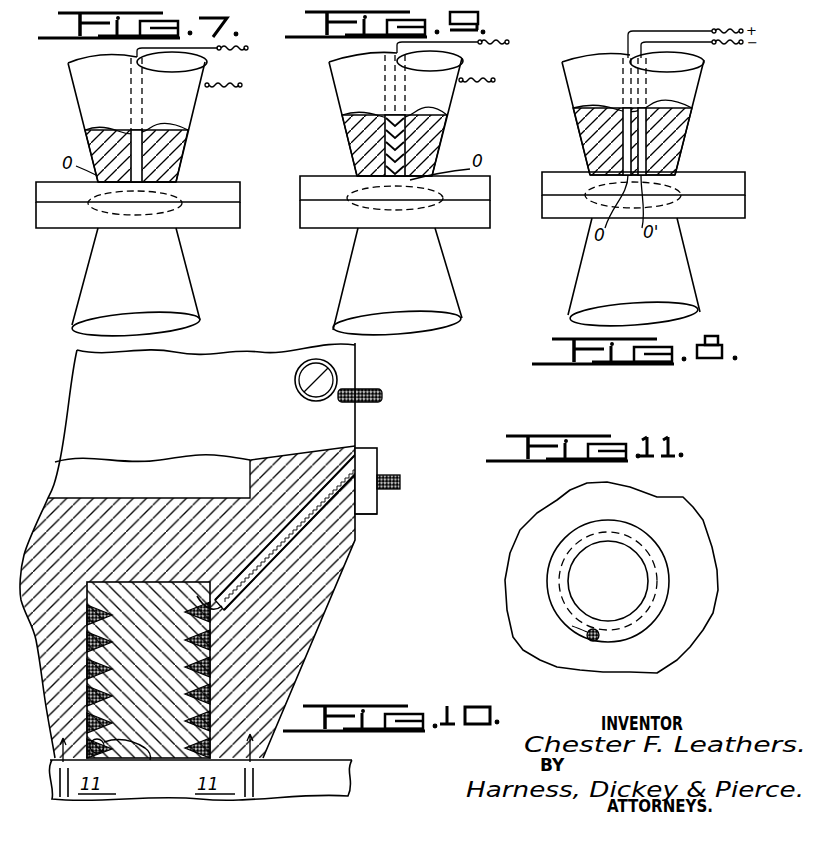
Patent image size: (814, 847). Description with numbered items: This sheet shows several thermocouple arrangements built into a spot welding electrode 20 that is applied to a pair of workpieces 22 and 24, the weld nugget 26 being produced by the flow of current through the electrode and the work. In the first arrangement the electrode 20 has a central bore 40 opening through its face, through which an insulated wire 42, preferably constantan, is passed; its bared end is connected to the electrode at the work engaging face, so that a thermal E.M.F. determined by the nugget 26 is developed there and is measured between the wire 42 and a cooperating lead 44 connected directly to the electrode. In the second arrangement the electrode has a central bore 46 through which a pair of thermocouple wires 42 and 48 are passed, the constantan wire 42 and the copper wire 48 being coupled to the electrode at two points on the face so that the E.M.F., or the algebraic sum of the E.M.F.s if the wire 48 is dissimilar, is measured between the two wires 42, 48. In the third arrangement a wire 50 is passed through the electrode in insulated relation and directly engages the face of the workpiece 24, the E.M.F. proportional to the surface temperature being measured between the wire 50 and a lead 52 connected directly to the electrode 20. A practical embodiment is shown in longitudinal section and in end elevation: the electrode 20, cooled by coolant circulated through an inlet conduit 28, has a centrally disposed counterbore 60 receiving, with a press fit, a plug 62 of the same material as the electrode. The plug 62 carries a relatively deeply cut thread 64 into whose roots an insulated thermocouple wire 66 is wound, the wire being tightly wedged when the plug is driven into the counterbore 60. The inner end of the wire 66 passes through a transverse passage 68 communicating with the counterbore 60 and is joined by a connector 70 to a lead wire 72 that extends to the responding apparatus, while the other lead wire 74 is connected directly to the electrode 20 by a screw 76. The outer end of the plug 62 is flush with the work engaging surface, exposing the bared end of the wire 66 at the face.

In FIG. 7, the spot welding electrode 20 is at (184, 112).
In FIG. 9, the spot welding electrode 20 is at (372, 95).
In FIG. 8, the spot welding electrode 20 is at (680, 96).
In FIG. 10, the spot welding electrode 20 is at (330, 626).
In FIG. 11, the spot welding electrode 20 is at (726, 576).
In FIG. 7, the workpiece 22 is at (232, 217).
In FIG. 9, the workpiece 22 is at (395, 214).
In FIG. 7, the workpiece 24 is at (222, 183).
In FIG. 9, the workpiece 24 is at (480, 178).
In FIG. 8, the workpiece 24 is at (733, 174).
In FIG. 10, the workpiece 24 is at (342, 774).
In FIG. 7, the weld nugget 26 is at (182, 212).
In FIG. 10, the inlet conduit 28 is at (215, 462).
In FIG. 7, the central bore 40 is at (142, 146).
In FIG. 7, the insulated wire 42 is at (142, 166).
In FIG. 9, the insulated wire 42 is at (360, 141).
In FIG. 8, the insulated wire 42 is at (602, 147).
In FIG. 7, the cooperating lead 44 is at (230, 88).
In FIG. 8, the central bore 46 is at (626, 128).
In FIG. 8, the thermocouple wire 48 is at (652, 130).
In FIG. 9, the wire 50 is at (478, 50).
In FIG. 9, the lead 52 is at (494, 83).
In FIG. 10, the counterbore 60 is at (140, 582).
In FIG. 10, the plug 62 is at (162, 760).
In FIG. 11, the plug 62 is at (620, 565).
In FIG. 10, the thread 64 is at (87, 676).
In FIG. 10, the insulated thermocouple wire 66 is at (362, 476).
In FIG. 10, the transverse passage 68 is at (300, 548).
In FIG. 10, the connector 70 is at (378, 505).
In FIG. 10, the lead wire 72 is at (400, 483).
In FIG. 10, the lead wire 74 is at (382, 395).
In FIG. 10, the screw 76 is at (332, 380).